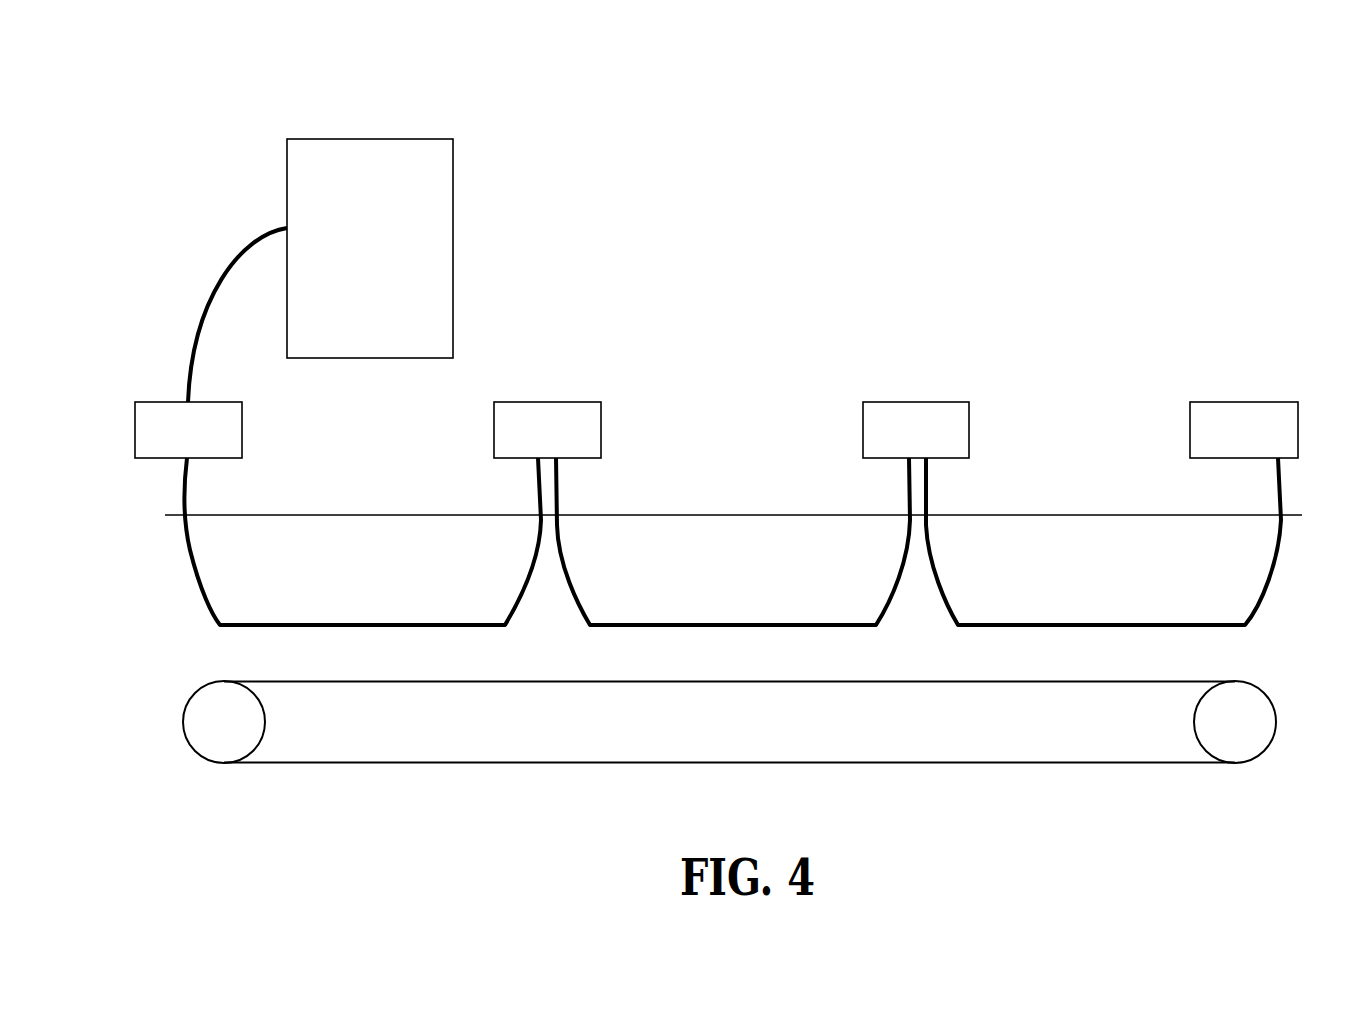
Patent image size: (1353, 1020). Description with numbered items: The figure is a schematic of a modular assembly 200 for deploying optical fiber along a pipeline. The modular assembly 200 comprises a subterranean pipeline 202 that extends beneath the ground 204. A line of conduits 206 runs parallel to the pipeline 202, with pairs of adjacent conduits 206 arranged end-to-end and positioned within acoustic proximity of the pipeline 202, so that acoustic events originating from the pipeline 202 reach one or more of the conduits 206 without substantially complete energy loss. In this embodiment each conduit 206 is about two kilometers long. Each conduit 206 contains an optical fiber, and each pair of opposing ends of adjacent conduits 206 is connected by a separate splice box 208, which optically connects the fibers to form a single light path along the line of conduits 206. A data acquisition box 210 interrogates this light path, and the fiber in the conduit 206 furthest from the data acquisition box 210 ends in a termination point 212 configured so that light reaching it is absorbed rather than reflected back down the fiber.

The modular assembly 200 is at (944, 103).
The subterranean pipeline 202 is at (1055, 763).
The ground 204 is at (722, 515).
The conduit 206 is at (288, 625).
The splice box 208 is at (228, 402).
The data acquisition box 210 is at (373, 139).
The termination point 212 is at (1244, 402).